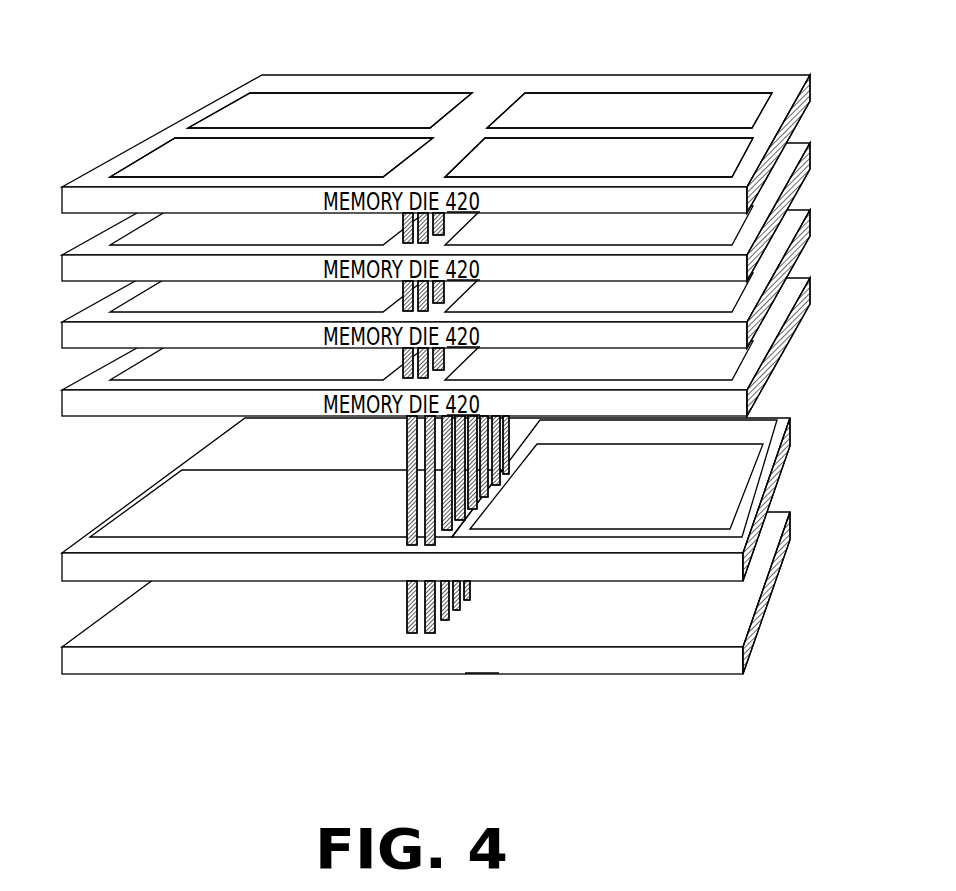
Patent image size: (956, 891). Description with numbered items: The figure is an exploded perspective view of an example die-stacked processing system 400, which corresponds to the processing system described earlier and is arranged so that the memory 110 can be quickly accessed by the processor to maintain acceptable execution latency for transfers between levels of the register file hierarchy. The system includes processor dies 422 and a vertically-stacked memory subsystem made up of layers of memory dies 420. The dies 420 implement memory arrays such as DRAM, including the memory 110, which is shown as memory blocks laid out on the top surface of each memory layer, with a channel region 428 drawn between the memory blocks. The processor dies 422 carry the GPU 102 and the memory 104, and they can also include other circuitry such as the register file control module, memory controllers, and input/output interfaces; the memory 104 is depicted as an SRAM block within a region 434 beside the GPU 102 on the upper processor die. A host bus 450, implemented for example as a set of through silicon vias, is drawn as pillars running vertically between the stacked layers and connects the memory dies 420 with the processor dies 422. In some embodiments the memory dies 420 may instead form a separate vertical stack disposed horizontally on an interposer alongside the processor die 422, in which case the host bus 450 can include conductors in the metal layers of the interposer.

The die-stacked processing system 400 is at (436, 375).
The memory dies 420 is at (436, 247).
The processor dies 422 is at (499, 579).
The memory 110 is at (332, 121).
The interconnect channel 428 is at (362, 137).
The host bus 450 is at (408, 486).
The GPU 102 is at (407, 510).
The memory 104 is at (635, 513).
The SRAM region 434 is at (533, 523).